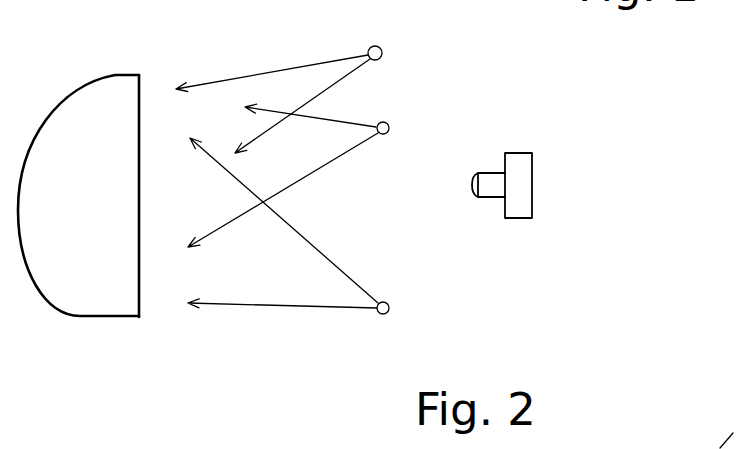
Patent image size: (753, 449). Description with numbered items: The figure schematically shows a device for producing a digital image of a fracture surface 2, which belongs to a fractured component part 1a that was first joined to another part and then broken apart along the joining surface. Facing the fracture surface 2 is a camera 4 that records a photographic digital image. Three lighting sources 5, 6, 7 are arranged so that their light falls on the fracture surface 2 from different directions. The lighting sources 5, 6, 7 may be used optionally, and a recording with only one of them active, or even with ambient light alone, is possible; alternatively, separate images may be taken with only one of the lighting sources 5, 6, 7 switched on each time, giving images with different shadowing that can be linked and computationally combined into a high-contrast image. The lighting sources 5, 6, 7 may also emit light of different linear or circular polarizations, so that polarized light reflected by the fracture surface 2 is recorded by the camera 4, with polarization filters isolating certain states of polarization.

The first part of fractured component 1a is at (81, 317).
The fracture surface 2 is at (143, 275).
The camera 4 is at (533, 162).
The lighting source 5 is at (382, 50).
The lighting source 6 is at (389, 126).
The lighting source 7 is at (387, 314).